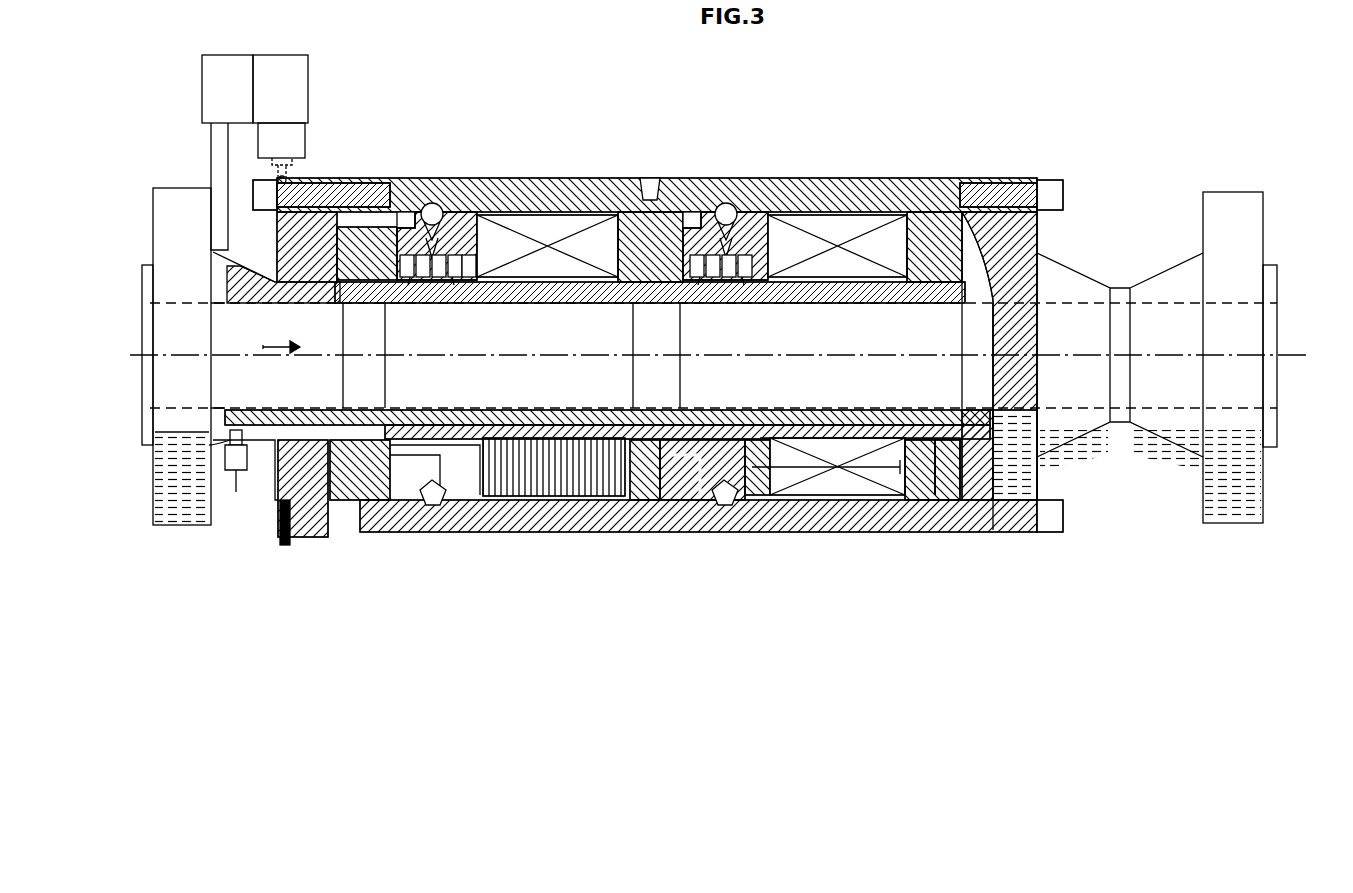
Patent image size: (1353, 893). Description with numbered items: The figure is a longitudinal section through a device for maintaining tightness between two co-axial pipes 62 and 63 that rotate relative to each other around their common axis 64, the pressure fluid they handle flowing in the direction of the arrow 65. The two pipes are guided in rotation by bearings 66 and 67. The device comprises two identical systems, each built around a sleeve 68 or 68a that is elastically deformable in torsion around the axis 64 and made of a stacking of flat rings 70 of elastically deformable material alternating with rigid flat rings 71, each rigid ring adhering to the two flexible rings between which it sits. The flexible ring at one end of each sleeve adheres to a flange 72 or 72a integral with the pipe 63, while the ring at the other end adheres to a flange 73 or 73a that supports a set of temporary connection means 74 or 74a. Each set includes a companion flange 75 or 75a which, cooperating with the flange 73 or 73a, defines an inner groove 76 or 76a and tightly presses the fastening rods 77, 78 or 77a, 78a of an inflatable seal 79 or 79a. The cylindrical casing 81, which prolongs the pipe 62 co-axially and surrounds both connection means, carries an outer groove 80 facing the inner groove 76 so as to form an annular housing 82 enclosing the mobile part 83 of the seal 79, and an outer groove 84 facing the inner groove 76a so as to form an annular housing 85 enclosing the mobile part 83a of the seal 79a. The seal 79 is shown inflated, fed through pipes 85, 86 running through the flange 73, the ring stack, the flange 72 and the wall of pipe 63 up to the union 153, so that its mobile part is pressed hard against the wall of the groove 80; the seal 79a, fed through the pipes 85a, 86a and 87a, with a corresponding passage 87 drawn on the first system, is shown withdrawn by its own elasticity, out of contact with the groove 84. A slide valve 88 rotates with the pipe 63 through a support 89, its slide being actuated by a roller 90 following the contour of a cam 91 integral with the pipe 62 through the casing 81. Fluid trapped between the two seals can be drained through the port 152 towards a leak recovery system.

The pipe 62 is at (1000, 240).
The pipe 63 is at (238, 500).
The common axis 64 is at (1003, 355).
The arrow 65 is at (281, 334).
The bearing 66 is at (325, 490).
The bearing 67 is at (985, 490).
The sleeve 68 is at (560, 222).
The sleeve 68a is at (860, 228).
The flat ring made of elastically deformable material 70 is at (522, 500).
The rigid flat ring 71 is at (490, 510).
The flange 72 is at (640, 215).
The flange 72a is at (935, 215).
The flange 73 is at (500, 200).
The flange 73a is at (765, 215).
The temporary connection means 74 is at (472, 215).
The temporary connection means 74a is at (760, 500).
The companion flange 75 is at (400, 212).
The companion flange 75a is at (692, 212).
The inner groove 76 is at (444, 210).
The inner groove 76a is at (740, 210).
The fastening rod 77 is at (424, 285).
The fastening rod 77a is at (712, 285).
The fastening rod 78 is at (452, 285).
The fastening rod 78a is at (746, 285).
The inflatable seal 79 is at (432, 505).
The inflatable seal 79a is at (722, 505).
The outer groove 80 is at (430, 200).
The cylindrical casing 81 is at (608, 200).
The annular housing 82 is at (440, 205).
The mobile part 83 is at (437, 513).
The mobile part 83a is at (716, 510).
The outer groove 84 is at (734, 205).
The annular housing / pipe 85 is at (745, 210).
The pipe 85a is at (920, 440).
The pipe 86 is at (672, 440).
The pipe 86a is at (970, 440).
The retaining ring 87 is at (560, 430).
The pipe 87a is at (887, 425).
The slide valve 88 is at (285, 108).
The support 89 is at (218, 103).
The roller 90 is at (290, 170).
The cam 91 is at (288, 545).
The port 152 is at (650, 185).
The union 153 is at (225, 462).